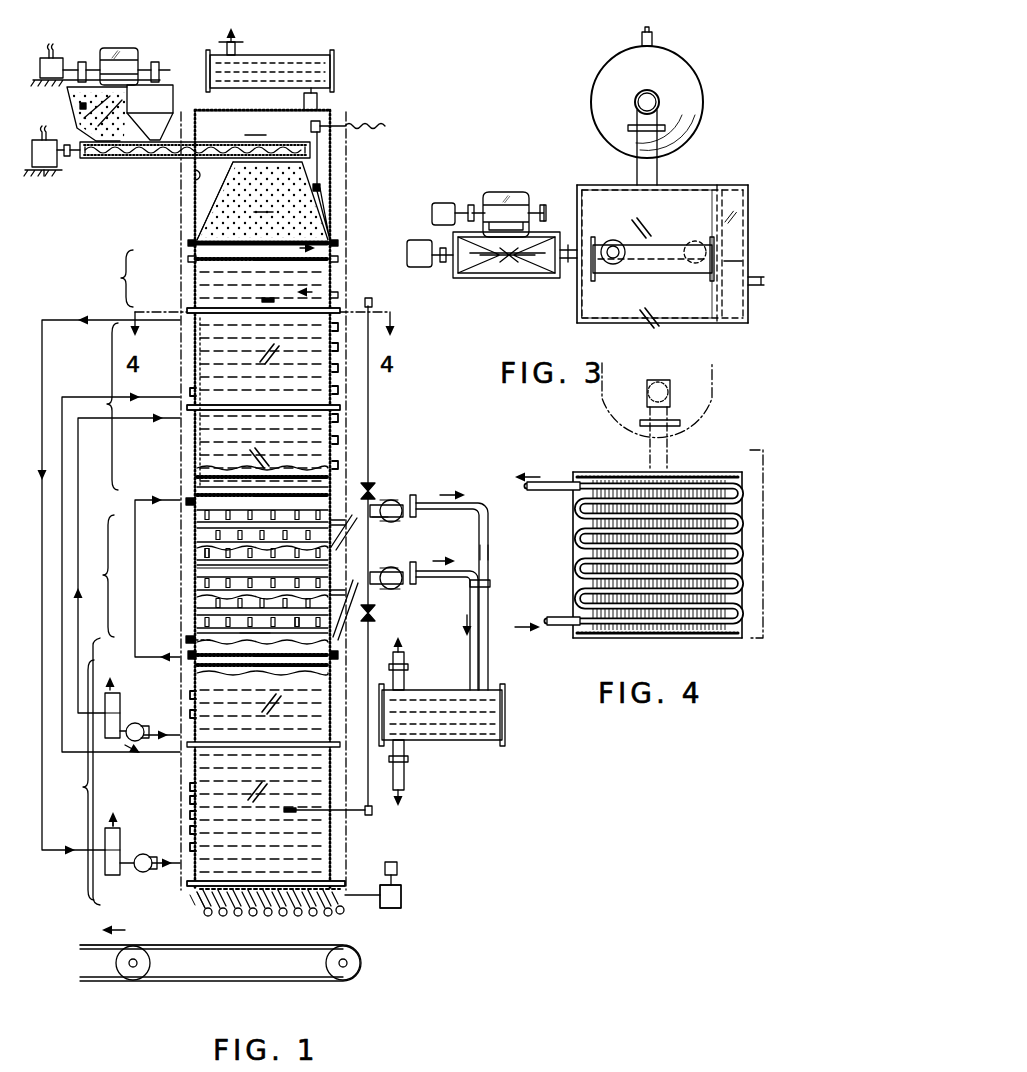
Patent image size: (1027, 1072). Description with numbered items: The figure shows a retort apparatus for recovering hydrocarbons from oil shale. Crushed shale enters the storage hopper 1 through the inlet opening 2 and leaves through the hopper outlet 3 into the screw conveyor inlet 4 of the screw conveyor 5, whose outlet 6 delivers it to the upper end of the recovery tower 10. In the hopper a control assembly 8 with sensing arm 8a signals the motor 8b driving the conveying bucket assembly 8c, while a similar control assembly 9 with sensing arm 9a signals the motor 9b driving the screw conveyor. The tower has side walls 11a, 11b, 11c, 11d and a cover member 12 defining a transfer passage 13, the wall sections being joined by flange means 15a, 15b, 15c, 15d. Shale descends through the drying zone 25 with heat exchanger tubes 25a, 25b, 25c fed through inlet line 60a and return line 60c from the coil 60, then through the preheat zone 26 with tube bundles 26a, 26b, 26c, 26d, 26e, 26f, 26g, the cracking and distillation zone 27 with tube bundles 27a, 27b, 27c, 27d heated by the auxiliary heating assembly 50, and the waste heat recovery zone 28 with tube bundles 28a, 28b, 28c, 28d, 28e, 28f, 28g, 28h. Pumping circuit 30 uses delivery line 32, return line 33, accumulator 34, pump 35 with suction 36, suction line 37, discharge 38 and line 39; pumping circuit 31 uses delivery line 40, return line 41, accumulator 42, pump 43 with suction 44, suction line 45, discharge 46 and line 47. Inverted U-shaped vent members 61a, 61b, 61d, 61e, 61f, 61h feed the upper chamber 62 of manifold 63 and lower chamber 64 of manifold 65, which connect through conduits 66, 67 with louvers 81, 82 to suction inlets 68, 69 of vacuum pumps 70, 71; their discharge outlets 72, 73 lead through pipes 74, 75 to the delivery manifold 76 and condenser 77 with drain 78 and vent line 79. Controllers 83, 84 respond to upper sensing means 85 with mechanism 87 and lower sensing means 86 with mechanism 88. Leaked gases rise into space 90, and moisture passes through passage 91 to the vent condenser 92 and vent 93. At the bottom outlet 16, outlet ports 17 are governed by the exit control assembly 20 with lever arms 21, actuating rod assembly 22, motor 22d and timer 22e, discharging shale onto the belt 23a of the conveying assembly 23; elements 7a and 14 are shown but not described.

In FIG. 1, the storage hopper 1 is at (160, 100).
In FIG. 3, the storage hopper 1 is at (477, 283).
In FIG. 1, the storage hopper inlet opening 2 is at (70, 100).
In FIG. 1, the hopper outlet 3 is at (52, 148).
In FIG. 1, the screw conveyor inlet 4 is at (92, 160).
In FIG. 3, the screw conveyor inlet 4 is at (512, 265).
In FIG. 1, the screw conveyor 5 is at (122, 159).
In FIG. 3, the screw conveyor 5 is at (570, 245).
In FIG. 1, the screw conveyor outlet 6 is at (232, 168).
In FIG. 1, the inlet port 7a is at (189, 176).
In FIG. 1, the control assembly 8 is at (103, 108).
In FIG. 1, the sensing arm 8a is at (90, 108).
In FIG. 1, the motor 8b is at (58, 64).
In FIG. 3, the motor 8b is at (446, 203).
In FIG. 1, the conveying bucket assembly 8c is at (139, 62).
In FIG. 3, the conveying bucket assembly 8c is at (511, 190).
In FIG. 1, the control assembly 9 is at (311, 126).
In FIG. 1, the sensing arm 9a is at (312, 188).
In FIG. 1, the motor 9b is at (45, 176).
In FIG. 3, the motor 9b is at (418, 240).
In FIG. 1, the elongated housing or recovery tower 10 is at (188, 222).
In FIG. 1, the side wall 11a is at (192, 194).
In FIG. 3, the side wall 11a is at (580, 292).
In FIG. 4, the side wall 11a is at (574, 567).
In FIG. 1, the side wall 11b is at (212, 118).
In FIG. 3, the side wall 11b is at (613, 187).
In FIG. 4, the side wall 11b is at (635, 472).
In FIG. 1, the side wall 11c is at (334, 172).
In FIG. 3, the side wall 11c is at (700, 178).
In FIG. 4, the side wall 11c is at (744, 550).
In FIG. 3, the side wall 11d is at (612, 326).
In FIG. 4, the side wall 11d is at (680, 636).
In FIG. 1, the top or cover member 12 is at (228, 116).
In FIG. 3, the top or cover member 12 is at (690, 312).
In FIG. 1, the transfer passage 13 is at (262, 201).
In FIG. 1, the tray 14 is at (190, 388).
In FIG. 1, the flange means 15a is at (184, 322).
In FIG. 1, the flange means 15b is at (185, 412).
In FIG. 1, the flange means 15c is at (187, 500).
In FIG. 1, the flange means 15d is at (188, 640).
In FIG. 1, the outlet 16 is at (334, 863).
In FIG. 1, the outlet ports 17 is at (208, 890).
In FIG. 1, the outlet or exit control assembly 20 is at (188, 913).
In FIG. 1, the lever arms 21 is at (202, 915).
In FIG. 1, the actuating rod assembly 22 is at (393, 908).
In FIG. 1, the motor 22d is at (400, 898).
In FIG. 1, the timer 22e is at (398, 868).
In FIG. 1, the conveying assembly 23 is at (326, 942).
In FIG. 1, the belt 23a is at (262, 945).
In FIG. 1, the drying zone 25 is at (115, 278).
In FIG. 1, the heat exchanger tube 25a is at (188, 243).
In FIG. 1, the heat exchanger tube 25b is at (189, 260).
In FIG. 1, the heat exchanger tube 25c is at (189, 292).
In FIG. 1, the preheat zone 26 is at (203, 404).
In FIG. 1, the heat exchange tube bundle 26a is at (336, 327).
In FIG. 4, the heat exchange tube bundle 26a is at (700, 487).
In FIG. 1, the heat exchange tube bundle 26b is at (336, 347).
In FIG. 1, the heat exchange tube bundle 26c is at (336, 368).
In FIG. 1, the heat exchange tube bundle 26d is at (336, 390).
In FIG. 1, the heat exchange tube bundle 26e is at (336, 418).
In FIG. 1, the coil tube 26f is at (336, 440).
In FIG. 1, the coil tube 26g is at (336, 465).
In FIG. 1, the cracking and distillation zone 27 is at (211, 565).
In FIG. 1, the tube bundle 27a is at (202, 515).
In FIG. 1, the tube bundle 27b is at (212, 553).
In FIG. 1, the tube bundle 27c is at (202, 583).
In FIG. 1, the tube bundle 27d is at (294, 624).
In FIG. 1, the waste heat recovery zone 28 is at (225, 915).
In FIG. 1, the heat exchange tube bundle 28a is at (192, 676).
In FIG. 1, the heat exchange tube bundle 28b is at (190, 695).
In FIG. 1, the heat exchange tube bundle 28c is at (190, 714).
In FIG. 1, the heat exchange tube bundle 28d is at (190, 787).
In FIG. 1, the heat exchange tube bundle 28e is at (190, 800).
In FIG. 1, the heat exchange tube bundle 28f is at (190, 815).
In FIG. 1, the heat exchange tube bundle 28g is at (190, 830).
In FIG. 1, the heat exchange tube bundle 28h is at (190, 847).
In FIG. 1, the pumping circuit 30 is at (112, 688).
In FIG. 1, the pumping circuit 31 is at (112, 826).
In FIG. 1, the common delivery line manifold 32 is at (148, 497).
In FIG. 1, the common return line manifold 33 is at (140, 420).
In FIG. 1, the storage and accumulator member 34 is at (102, 728).
In FIG. 1, the circulating pump 35 is at (134, 742).
In FIG. 1, the suction 36 is at (130, 748).
In FIG. 1, the suction line 37 is at (126, 729).
In FIG. 1, the discharge 38 is at (145, 742).
In FIG. 1, the line 39 is at (152, 736).
In FIG. 1, the common delivery line 40 is at (150, 398).
In FIG. 4, the common delivery line 40 is at (553, 634).
In FIG. 1, the common return line manifold 41 is at (62, 339).
In FIG. 4, the common return line manifold 41 is at (552, 483).
In FIG. 1, the storage accumulator 42 is at (100, 858).
In FIG. 1, the circulating pump 43 is at (141, 873).
In FIG. 1, the suction 44 is at (132, 868).
In FIG. 1, the suction line 45 is at (122, 856).
In FIG. 1, the discharge 46 is at (152, 873).
In FIG. 1, the line 47 is at (162, 868).
In FIG. 3, the auxiliary heating assembly 50 is at (706, 68).
In FIG. 4, the auxiliary heating assembly 50 is at (722, 410).
In FIG. 1, the heat exchange coil 60 is at (498, 556).
In FIG. 1, the inlet line 60a is at (334, 295).
In FIG. 1, the return line 60c is at (336, 250).
In FIG. 1, the U-shaped vent member 61a is at (197, 530).
In FIG. 1, the U-shaped vent member 61b is at (197, 546).
In FIG. 1, the U-shaped vent member 61d is at (197, 568).
In FIG. 1, the U-shaped vent member 61e is at (197, 603).
In FIG. 1, the U-shaped vent member 61f is at (197, 622).
In FIG. 1, the U-shaped vent member 61h is at (256, 630).
In FIG. 1, the upper chamber 62 is at (339, 527).
In FIG. 3, the upper chamber 62 is at (730, 254).
In FIG. 4, the upper chamber 62 is at (751, 532).
In FIG. 1, the upper hydrocarbon collecting manifold 63 is at (356, 535).
In FIG. 1, the lower chamber 64 is at (339, 597).
In FIG. 1, the lower hydrocarbon collecting manifold 65 is at (347, 618).
In FIG. 1, the connecting conduit 66 is at (386, 503).
In FIG. 3, the connecting conduit 66 is at (753, 276).
In FIG. 1, the connecting conduit 67 is at (378, 578).
In FIG. 1, the suction inlet 68 is at (398, 520).
In FIG. 1, the suction inlet 69 is at (398, 589).
In FIG. 1, the vacuum pump 70 is at (398, 500).
In FIG. 1, the vacuum pump 71 is at (398, 571).
In FIG. 1, the discharge outlet 72 is at (417, 499).
In FIG. 1, the discharge outlet 73 is at (413, 563).
In FIG. 1, the connecting pipe 74 is at (448, 514).
In FIG. 1, the connecting pipe 75 is at (448, 582).
In FIG. 1, the common delivery manifold 76 is at (492, 584).
In FIG. 1, the condenser 77 is at (436, 696).
In FIG. 1, the drain 78 is at (406, 752).
In FIG. 1, the vent line 79 is at (404, 665).
In FIG. 1, the control louver 81 is at (386, 522).
In FIG. 1, the control louver 82 is at (377, 612).
In FIG. 1, the controller 83 is at (364, 492).
In FIG. 1, the controller 84 is at (383, 622).
In FIG. 1, the upper sensing means 85 is at (372, 302).
In FIG. 1, the lower sensing means 86 is at (370, 815).
In FIG. 1, the sensing mechanism 87 is at (262, 300).
In FIG. 1, the sensing mechanism 88 is at (290, 808).
In FIG. 1, the space 90 is at (255, 127).
In FIG. 1, the connecting passage 91 is at (320, 102).
In FIG. 3, the connecting passage 91 is at (689, 265).
In FIG. 1, the vent condenser 92 is at (331, 70).
In FIG. 3, the vent condenser 92 is at (656, 245).
In FIG. 1, the vent 93 is at (237, 53).
In FIG. 3, the vent 93 is at (613, 240).